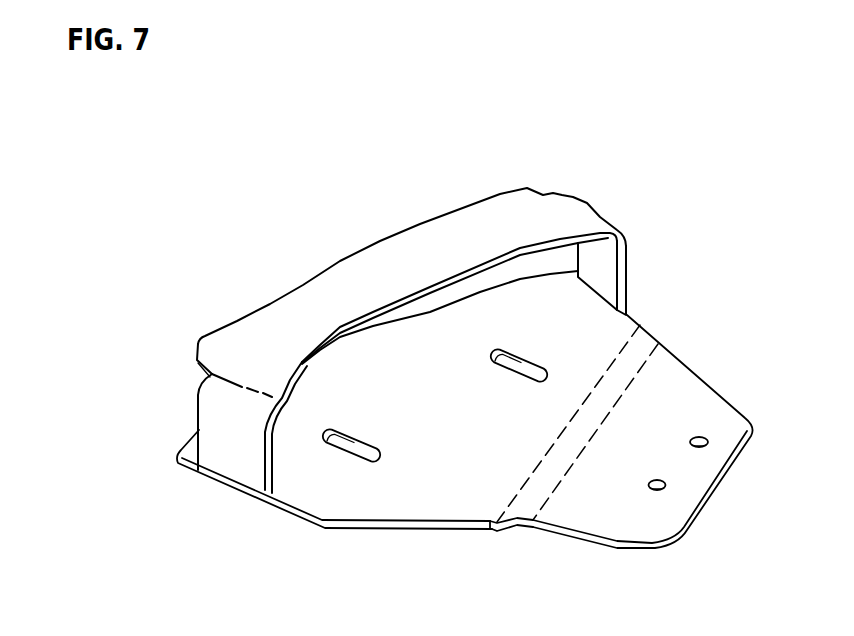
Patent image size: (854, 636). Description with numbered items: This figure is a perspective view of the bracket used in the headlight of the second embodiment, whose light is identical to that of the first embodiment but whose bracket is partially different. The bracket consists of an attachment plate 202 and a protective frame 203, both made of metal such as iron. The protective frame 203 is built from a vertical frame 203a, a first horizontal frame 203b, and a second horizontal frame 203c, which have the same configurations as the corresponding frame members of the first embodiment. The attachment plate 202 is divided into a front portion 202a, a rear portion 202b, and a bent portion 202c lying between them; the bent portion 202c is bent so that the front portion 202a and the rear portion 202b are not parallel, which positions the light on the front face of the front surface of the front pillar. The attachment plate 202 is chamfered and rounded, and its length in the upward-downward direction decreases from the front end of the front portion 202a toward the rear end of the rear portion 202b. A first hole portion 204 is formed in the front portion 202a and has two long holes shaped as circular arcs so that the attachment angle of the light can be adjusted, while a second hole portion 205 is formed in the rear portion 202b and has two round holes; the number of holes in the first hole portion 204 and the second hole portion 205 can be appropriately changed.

The attachment plate 202 is at (491, 459).
The front portion 202a is at (315, 483).
The rear portion 202b is at (669, 459).
The bent portion 202c is at (518, 513).
The protective frame 203 is at (423, 300).
The vertical frame 203a is at (360, 272).
The first horizontal frame 203b is at (222, 425).
The second horizontal frame 203c is at (602, 258).
The first hole portion 204 is at (523, 370).
The second hole portion 205 is at (703, 447).